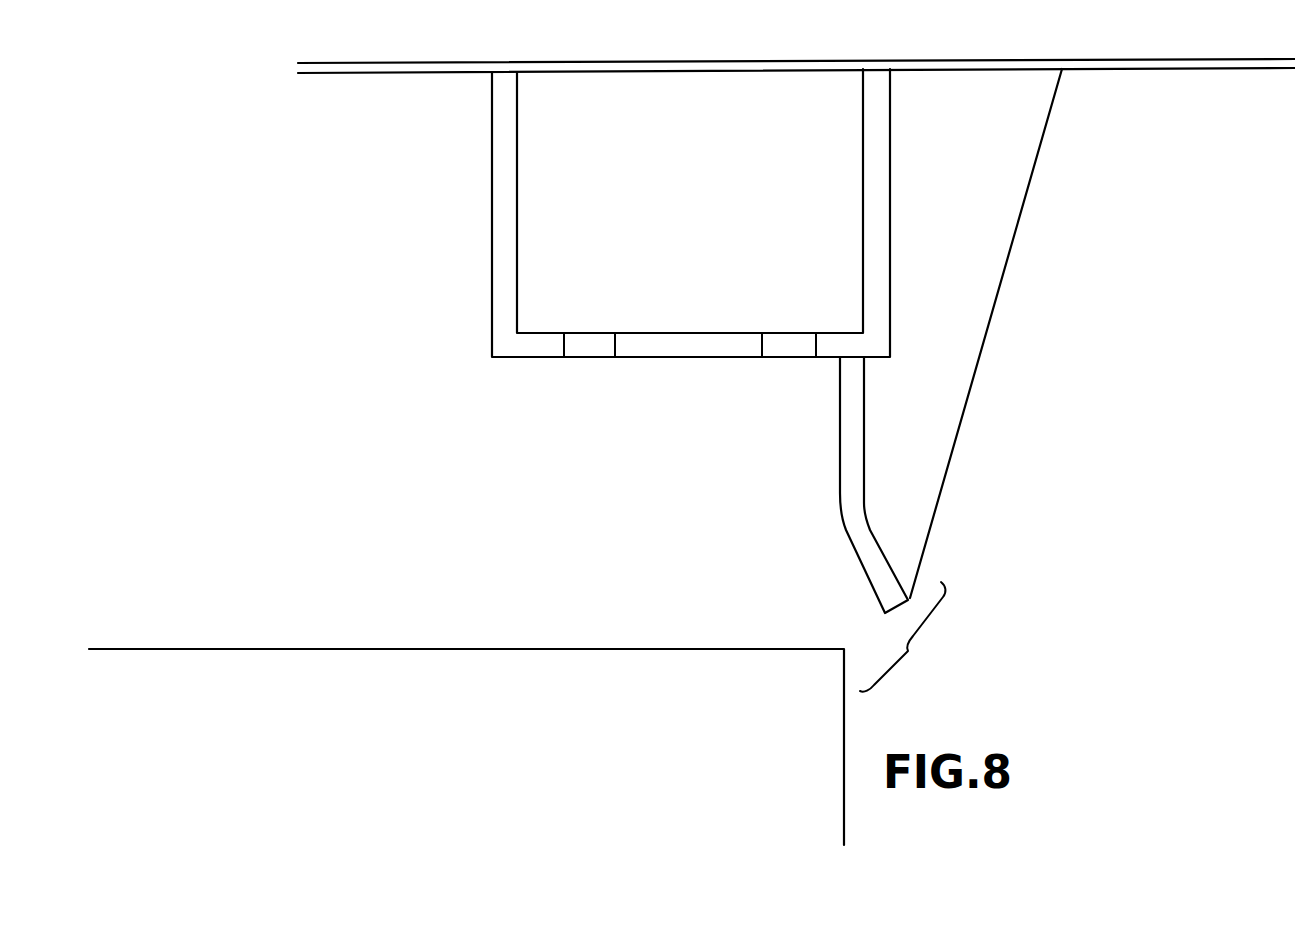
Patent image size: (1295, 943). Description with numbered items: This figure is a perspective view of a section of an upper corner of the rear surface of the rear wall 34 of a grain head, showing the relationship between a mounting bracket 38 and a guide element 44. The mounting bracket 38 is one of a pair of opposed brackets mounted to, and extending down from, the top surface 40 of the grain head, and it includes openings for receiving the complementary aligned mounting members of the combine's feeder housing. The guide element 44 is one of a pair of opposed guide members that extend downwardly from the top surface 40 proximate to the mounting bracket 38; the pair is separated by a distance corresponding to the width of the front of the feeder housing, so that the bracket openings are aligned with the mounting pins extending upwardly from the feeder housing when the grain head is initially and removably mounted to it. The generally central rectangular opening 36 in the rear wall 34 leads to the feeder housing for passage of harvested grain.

The rear wall 34 is at (423, 411).
The generally central rectangular opening 36 is at (375, 649).
The mounting bracket 38 is at (492, 308).
The top surface 40 is at (598, 63).
The guide member 44 is at (1017, 222).